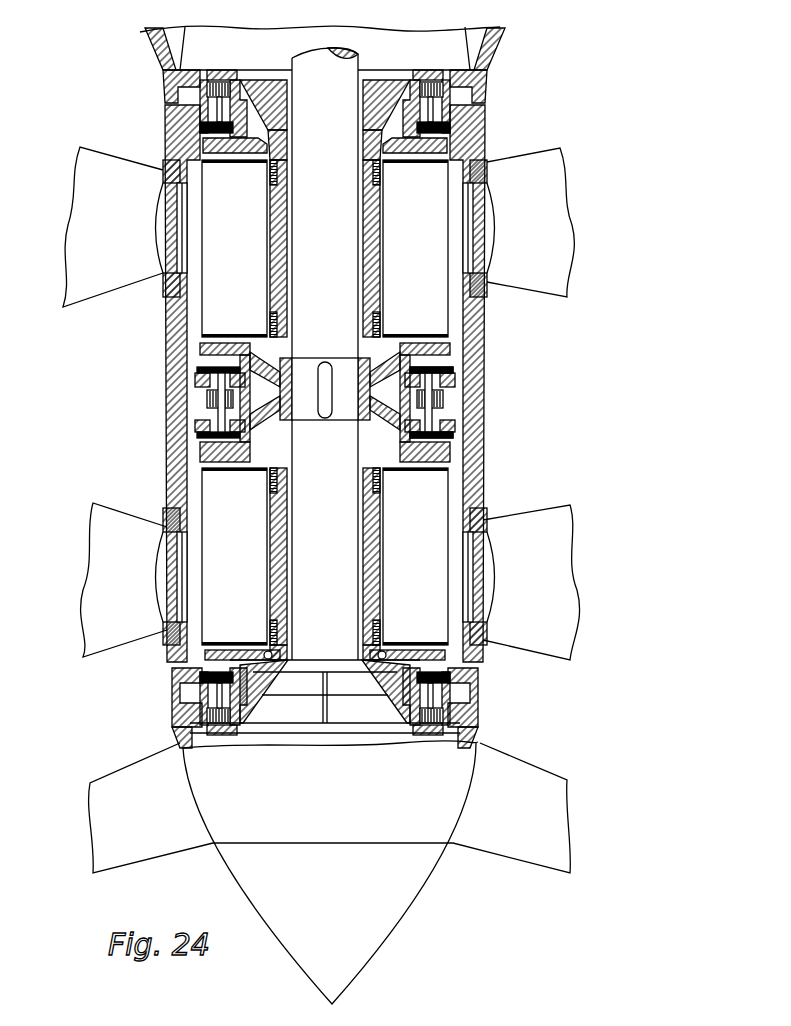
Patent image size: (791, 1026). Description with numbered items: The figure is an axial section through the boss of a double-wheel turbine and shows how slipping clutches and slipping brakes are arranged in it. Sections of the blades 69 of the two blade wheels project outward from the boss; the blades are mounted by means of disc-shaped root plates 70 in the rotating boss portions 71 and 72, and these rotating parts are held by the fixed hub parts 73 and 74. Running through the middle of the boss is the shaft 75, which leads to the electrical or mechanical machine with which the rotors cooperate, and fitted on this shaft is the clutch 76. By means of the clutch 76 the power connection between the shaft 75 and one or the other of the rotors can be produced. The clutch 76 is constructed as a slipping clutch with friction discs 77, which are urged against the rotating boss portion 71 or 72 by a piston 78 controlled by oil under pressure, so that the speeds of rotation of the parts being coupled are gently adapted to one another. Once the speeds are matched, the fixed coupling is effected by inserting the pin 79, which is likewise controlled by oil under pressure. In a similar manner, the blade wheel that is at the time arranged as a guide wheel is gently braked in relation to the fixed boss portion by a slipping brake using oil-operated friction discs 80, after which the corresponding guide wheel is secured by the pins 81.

The blades 69 is at (321, 510).
The root plates 70 is at (477, 278).
The rotating boss portion 71 is at (190, 668).
The rotating boss portion 72 is at (180, 332).
The fixed hub part 73 is at (473, 724).
The fixed hub part 74 is at (478, 85).
The shaft 75 is at (325, 354).
The clutch 76 is at (369, 420).
The friction discs 77 is at (450, 366).
The piston 78 is at (437, 399).
The pin 79 is at (222, 390).
The friction discs 80 is at (433, 118).
The pins 81 is at (218, 118).